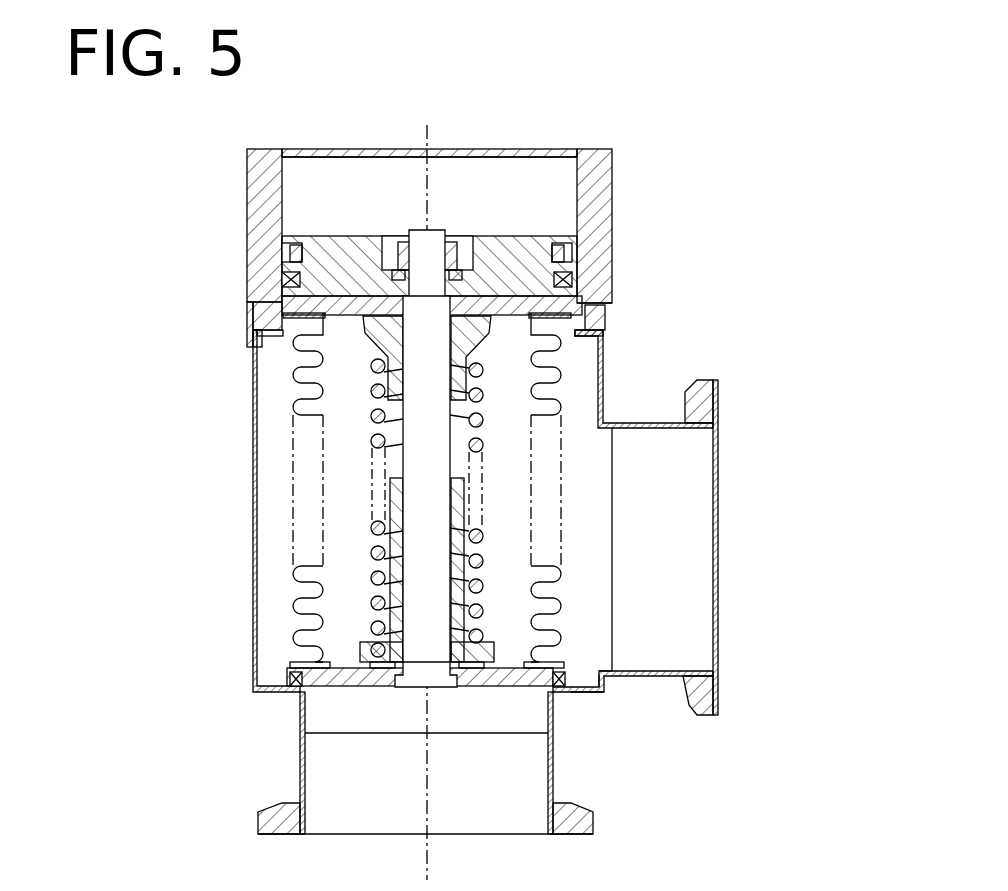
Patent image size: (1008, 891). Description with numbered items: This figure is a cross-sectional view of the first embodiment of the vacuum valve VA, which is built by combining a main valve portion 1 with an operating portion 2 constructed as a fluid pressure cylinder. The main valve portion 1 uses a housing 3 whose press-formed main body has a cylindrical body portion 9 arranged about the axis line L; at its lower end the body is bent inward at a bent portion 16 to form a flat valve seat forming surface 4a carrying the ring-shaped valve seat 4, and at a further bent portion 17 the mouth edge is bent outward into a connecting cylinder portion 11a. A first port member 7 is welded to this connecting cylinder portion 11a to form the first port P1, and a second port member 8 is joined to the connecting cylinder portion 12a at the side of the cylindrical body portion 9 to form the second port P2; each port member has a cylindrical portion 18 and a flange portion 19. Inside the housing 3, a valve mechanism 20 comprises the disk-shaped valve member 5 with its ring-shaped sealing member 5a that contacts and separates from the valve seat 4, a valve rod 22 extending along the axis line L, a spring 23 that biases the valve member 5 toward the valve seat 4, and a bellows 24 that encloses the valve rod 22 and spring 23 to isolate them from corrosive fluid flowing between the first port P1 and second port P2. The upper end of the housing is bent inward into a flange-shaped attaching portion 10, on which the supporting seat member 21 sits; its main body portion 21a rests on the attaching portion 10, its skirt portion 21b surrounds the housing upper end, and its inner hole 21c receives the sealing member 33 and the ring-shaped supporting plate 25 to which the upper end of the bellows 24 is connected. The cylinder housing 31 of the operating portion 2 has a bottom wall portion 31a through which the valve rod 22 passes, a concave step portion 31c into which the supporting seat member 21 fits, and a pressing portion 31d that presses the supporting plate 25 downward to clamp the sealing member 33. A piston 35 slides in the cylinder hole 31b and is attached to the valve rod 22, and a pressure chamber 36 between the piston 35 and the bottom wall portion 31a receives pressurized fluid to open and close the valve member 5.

The main valve portion 1 is at (218, 405).
The operating portion 2 is at (645, 168).
The housing 3 is at (226, 440).
The valve seat 4 is at (302, 683).
The valve seat forming surface 4a is at (290, 680).
The valve member 5 is at (505, 683).
The sealing member 5a is at (596, 663).
The first port member 7 is at (465, 842).
The second port member 8 is at (746, 450).
The cylindrical body portion 9 is at (254, 470).
The attaching portion 10 is at (603, 355).
The connecting cylinder portion 11a is at (300, 712).
The connecting cylinder portion 12a is at (603, 682).
The bent portion 16 is at (598, 692).
The bent portion 17 is at (558, 690).
The cylindrical portion 18 is at (672, 676).
The flange portion 19 is at (720, 690).
The valve mechanism 20 is at (454, 702).
The supporting seat member 21 is at (703, 308).
The main body portion 21a is at (600, 318).
The skirt portion 21b is at (600, 340).
The inner hole 21c is at (276, 305).
The valve rod 22 is at (412, 493).
The spring 23 is at (380, 553).
The bellows 24 is at (300, 590).
The supporting plate 25 is at (278, 340).
The cylinder housing 31 is at (611, 206).
The bottom wall portion 31a is at (350, 310).
The cylinder hole 31b is at (282, 192).
The concave step portion 31c is at (610, 300).
The pressing portion 31d is at (582, 298).
The sealing member 33 is at (252, 322).
The piston 35 is at (520, 238).
The pressure chamber 36 is at (286, 300).
The axis line L is at (426, 489).
The first port P1 is at (378, 822).
The second port P2 is at (698, 530).
The vacuum valve VA is at (651, 123).